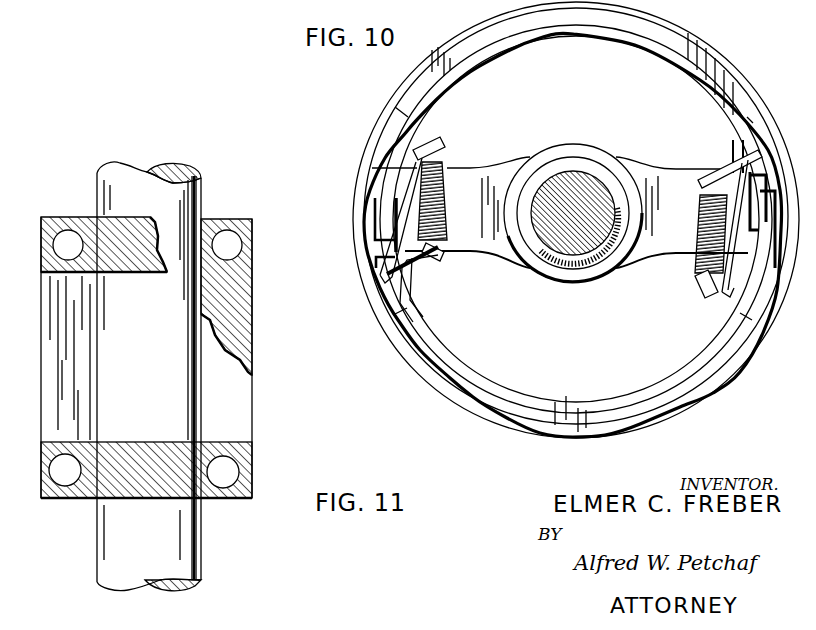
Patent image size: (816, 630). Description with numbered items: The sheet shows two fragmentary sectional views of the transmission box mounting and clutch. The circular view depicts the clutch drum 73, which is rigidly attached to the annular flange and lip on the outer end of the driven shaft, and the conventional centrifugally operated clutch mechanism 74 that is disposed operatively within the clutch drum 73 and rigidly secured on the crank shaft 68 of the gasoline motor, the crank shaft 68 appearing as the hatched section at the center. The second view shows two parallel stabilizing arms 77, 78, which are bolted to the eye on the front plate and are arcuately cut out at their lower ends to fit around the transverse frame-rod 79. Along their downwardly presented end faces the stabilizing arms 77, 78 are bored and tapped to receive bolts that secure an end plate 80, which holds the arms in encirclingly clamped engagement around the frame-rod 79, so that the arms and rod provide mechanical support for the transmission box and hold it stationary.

In FIG. 10, the crank shaft 68 is at (588, 176).
In FIG. 10, the clutch drum 73 is at (725, 379).
In FIG. 10, the clutch mechanism 74 is at (483, 373).
In FIG. 11, the stabilizing arm 77 is at (58, 217).
In FIG. 11, the stabilizing arm 78 is at (60, 499).
In FIG. 11, the frame-rod 79 is at (200, 179).
In FIG. 11, the end plate 80 is at (252, 399).